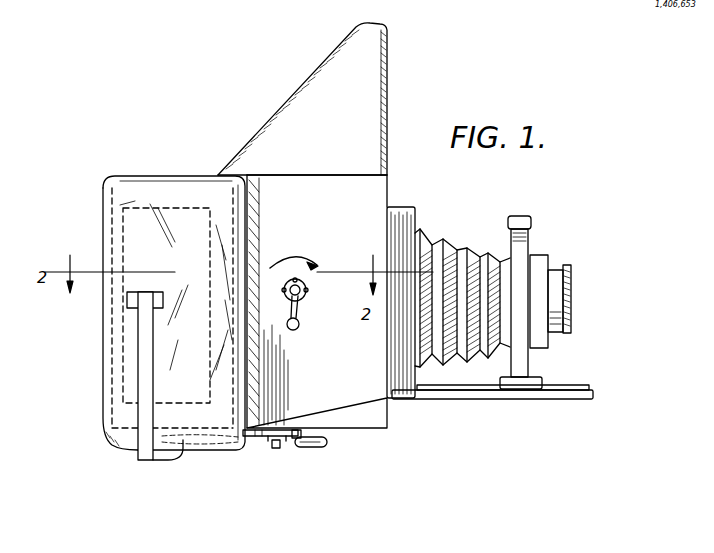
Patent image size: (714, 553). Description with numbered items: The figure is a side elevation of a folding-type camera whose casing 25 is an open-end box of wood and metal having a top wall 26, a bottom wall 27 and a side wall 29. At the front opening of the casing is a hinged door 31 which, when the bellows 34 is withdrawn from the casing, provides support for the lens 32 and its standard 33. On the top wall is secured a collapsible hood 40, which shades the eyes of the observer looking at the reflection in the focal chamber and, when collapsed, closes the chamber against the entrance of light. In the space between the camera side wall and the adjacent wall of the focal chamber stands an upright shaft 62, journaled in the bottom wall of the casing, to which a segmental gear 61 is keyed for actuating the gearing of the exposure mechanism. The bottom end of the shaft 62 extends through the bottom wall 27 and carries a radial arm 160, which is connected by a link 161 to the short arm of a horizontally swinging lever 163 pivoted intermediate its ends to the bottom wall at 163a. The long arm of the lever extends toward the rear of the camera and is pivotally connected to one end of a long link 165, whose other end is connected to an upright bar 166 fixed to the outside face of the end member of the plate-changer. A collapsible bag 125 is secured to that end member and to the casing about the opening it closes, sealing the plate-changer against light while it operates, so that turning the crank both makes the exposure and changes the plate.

The casing 25 is at (170, 176).
The top wall 26 is at (297, 175).
The bottom wall 27 is at (348, 429).
The side wall 29 is at (317, 301).
The hinged door 31 is at (490, 400).
The lens 32 is at (572, 281).
The lens standard 33 is at (526, 244).
The bellows 34 is at (448, 246).
The collapsible hood 40 is at (316, 78).
The segmental gear 61 is at (300, 314).
The upright shaft 62 is at (298, 430).
The collapsible bag 125 is at (107, 428).
The radial arm 160 is at (322, 452).
The link 161 is at (298, 449).
The horizontally swinging lever 163 is at (253, 443).
The pivot 163a is at (278, 452).
The long link 165 is at (184, 455).
The upright bar 166 is at (137, 453).